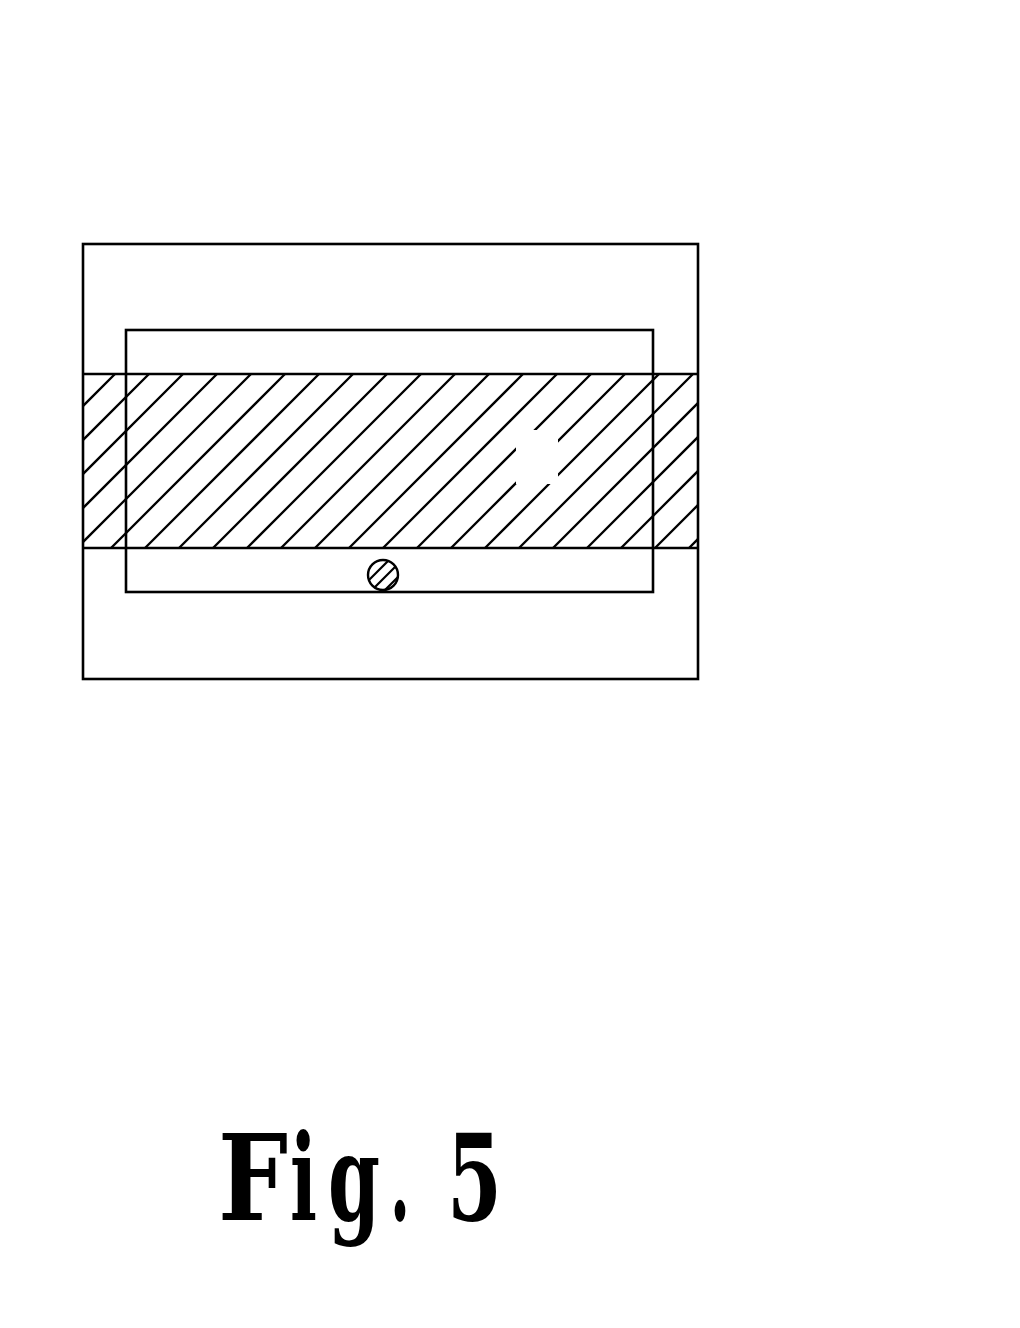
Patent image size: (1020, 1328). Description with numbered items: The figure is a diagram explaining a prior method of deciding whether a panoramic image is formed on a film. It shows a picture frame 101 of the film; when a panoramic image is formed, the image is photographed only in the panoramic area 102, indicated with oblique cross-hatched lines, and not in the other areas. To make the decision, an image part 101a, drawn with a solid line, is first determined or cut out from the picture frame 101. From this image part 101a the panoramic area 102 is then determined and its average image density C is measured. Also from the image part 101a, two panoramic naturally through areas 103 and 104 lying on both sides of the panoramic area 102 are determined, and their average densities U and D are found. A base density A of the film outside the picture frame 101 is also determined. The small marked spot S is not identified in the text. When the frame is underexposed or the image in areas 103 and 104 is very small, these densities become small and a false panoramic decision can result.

The picture frame 101 is at (685, 213).
The image part 101a is at (628, 328).
The panoramic area 102 is at (677, 457).
The panoramic naturally through area 103 is at (643, 353).
The panoramic naturally through area 104 is at (635, 573).
The sensor S is at (403, 592).